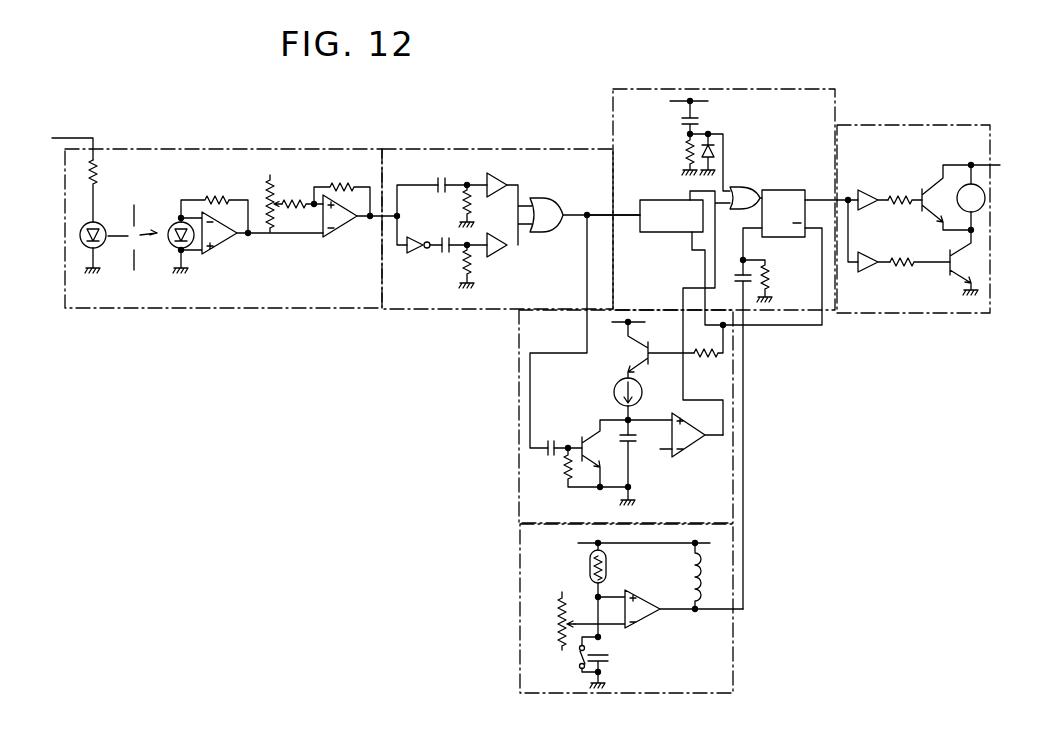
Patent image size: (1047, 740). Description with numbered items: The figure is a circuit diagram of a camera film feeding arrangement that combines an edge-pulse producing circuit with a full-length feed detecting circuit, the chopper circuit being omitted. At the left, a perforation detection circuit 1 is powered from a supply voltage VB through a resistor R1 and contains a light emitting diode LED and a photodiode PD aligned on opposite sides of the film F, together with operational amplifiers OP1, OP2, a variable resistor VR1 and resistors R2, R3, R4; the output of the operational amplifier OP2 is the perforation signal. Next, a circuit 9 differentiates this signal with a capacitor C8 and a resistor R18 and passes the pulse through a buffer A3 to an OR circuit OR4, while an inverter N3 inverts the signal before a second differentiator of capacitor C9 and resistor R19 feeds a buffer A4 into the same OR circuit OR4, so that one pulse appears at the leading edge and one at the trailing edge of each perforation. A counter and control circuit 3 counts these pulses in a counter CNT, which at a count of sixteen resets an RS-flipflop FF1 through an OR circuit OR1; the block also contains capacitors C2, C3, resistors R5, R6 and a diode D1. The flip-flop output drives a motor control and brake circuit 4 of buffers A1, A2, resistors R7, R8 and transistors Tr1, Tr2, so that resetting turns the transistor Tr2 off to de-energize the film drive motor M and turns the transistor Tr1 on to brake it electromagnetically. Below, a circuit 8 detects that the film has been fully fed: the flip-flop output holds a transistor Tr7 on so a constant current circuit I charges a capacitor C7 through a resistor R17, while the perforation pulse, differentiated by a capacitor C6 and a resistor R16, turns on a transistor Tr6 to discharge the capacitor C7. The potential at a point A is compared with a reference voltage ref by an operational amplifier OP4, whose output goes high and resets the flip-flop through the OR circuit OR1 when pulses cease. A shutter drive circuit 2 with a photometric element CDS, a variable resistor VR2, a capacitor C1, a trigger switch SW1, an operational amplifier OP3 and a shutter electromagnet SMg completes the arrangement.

The perforation detection circuit 1 is at (288, 148).
The pulse producing circuit 9 is at (527, 148).
The counter and control circuit 3 is at (776, 88).
The motor control and brake circuit 4 is at (939, 124).
The film termination detecting circuit 8 is at (519, 427).
The shutter drive circuit 2 is at (520, 596).
The supply voltage VB is at (536, 324).
The resistor R1 is at (98, 172).
The light emitting diode LED is at (100, 221).
The film F is at (137, 208).
The photodiode PD is at (170, 251).
The operational amplifier OP1 is at (225, 250).
The resistor R2 is at (213, 197).
The variable resistor VR1 is at (274, 182).
The resistor R3 is at (300, 200).
The resistor R4 is at (342, 185).
The operational amplifier OP2 is at (338, 238).
The capacitor C8 is at (442, 177).
The resistor R18 is at (462, 210).
The buffer A3 is at (503, 181).
The inverter N3 is at (416, 256).
The capacitor C9 is at (445, 255).
The resistor R19 is at (472, 267).
The buffer A4 is at (496, 234).
The OR circuit OR4 is at (546, 200).
The capacitor C2 is at (700, 122).
The resistor R5 is at (684, 148).
The diode D1 is at (716, 151).
The counter CNT is at (655, 199).
The OR circuit OR1 is at (748, 188).
The RS-flipflop FF1 is at (794, 189).
The resistor R6 is at (770, 273).
The capacitor C3 is at (738, 282).
The buffer A1 is at (866, 189).
The resistor R7 is at (898, 197).
The transistor Tr1 is at (931, 185).
The film drive motor M is at (971, 197).
The buffer A2 is at (866, 251).
The resistor R8 is at (904, 259).
The transistor Tr2 is at (958, 281).
The capacitor C6 is at (550, 440).
The transistor Tr6 is at (588, 432).
The resistor R16 is at (565, 472).
The transistor Tr7 is at (640, 352).
The resistor R17 is at (708, 359).
The constant current circuit I is at (643, 391).
The point A is at (639, 421).
The capacitor C7 is at (618, 441).
The operational amplifier OP4 is at (690, 457).
The reference voltage ref is at (654, 448).
The photometric element CDS is at (607, 563).
The operational amplifier OP3 is at (650, 622).
The variable resistor VR2 is at (566, 591).
The shutter electromagnet SMg is at (690, 580).
The capacitor C1 is at (610, 658).
The trigger switch SW1 is at (576, 654).